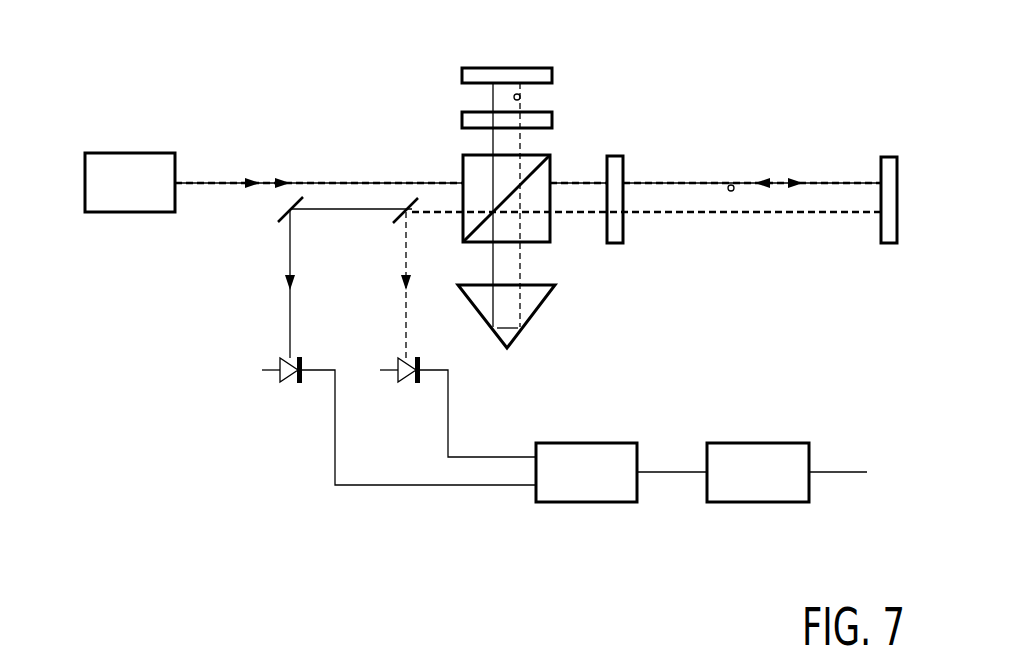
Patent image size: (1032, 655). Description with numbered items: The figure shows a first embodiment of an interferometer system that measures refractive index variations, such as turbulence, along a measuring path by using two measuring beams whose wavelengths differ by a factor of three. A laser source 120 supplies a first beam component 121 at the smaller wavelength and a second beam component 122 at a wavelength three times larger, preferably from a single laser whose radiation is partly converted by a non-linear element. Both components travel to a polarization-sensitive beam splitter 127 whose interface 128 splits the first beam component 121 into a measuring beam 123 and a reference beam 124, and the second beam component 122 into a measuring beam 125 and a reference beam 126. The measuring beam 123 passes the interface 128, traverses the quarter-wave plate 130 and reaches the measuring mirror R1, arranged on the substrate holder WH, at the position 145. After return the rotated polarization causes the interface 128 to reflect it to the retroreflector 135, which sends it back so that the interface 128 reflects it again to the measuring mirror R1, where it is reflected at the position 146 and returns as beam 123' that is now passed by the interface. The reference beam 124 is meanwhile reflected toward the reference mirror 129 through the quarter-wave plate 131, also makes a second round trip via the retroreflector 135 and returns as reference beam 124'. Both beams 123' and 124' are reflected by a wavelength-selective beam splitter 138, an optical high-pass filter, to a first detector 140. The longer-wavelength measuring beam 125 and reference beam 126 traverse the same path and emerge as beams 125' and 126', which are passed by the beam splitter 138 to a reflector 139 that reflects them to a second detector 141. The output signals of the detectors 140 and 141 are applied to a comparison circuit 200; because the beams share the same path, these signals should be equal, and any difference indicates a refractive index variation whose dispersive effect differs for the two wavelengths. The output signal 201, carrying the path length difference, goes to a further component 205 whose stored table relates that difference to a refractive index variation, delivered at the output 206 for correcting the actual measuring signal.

The laser source 120 is at (120, 153).
The first beam component 121 is at (273, 182).
The second beam component 122 is at (203, 186).
The measuring beam 123 is at (752, 154).
The reference beam 124 is at (560, 205).
The measuring beam 125 is at (765, 158).
The reference beam 126 is at (547, 203).
The polarization-sensitive beam splitter 127 is at (478, 168).
The interface 128 is at (468, 243).
The reference mirror 129 is at (497, 68).
The λ/4 plate 130 is at (617, 248).
The λ/4 plate 131 is at (462, 120).
The retroreflector 135 is at (517, 337).
The wavelength-selective beam splitter 138 is at (400, 216).
The reflector 139 is at (289, 203).
The first detector 140 is at (404, 383).
The second detector 141 is at (286, 383).
The position on measuring mirror 145 is at (877, 182).
The position on measuring mirror 146 is at (872, 214).
The comparison circuit 200 is at (586, 502).
The output signal 201 is at (671, 473).
The further component 205 is at (760, 502).
The output 206 is at (853, 473).
The substrate holder WH is at (889, 157).
The measuring mirror R1 is at (877, 233).
The measuring beam 125' is at (273, 283).
The reference beam 126' is at (267, 335).
The measuring beam 123' is at (390, 285).
The reference beam 124' is at (385, 335).